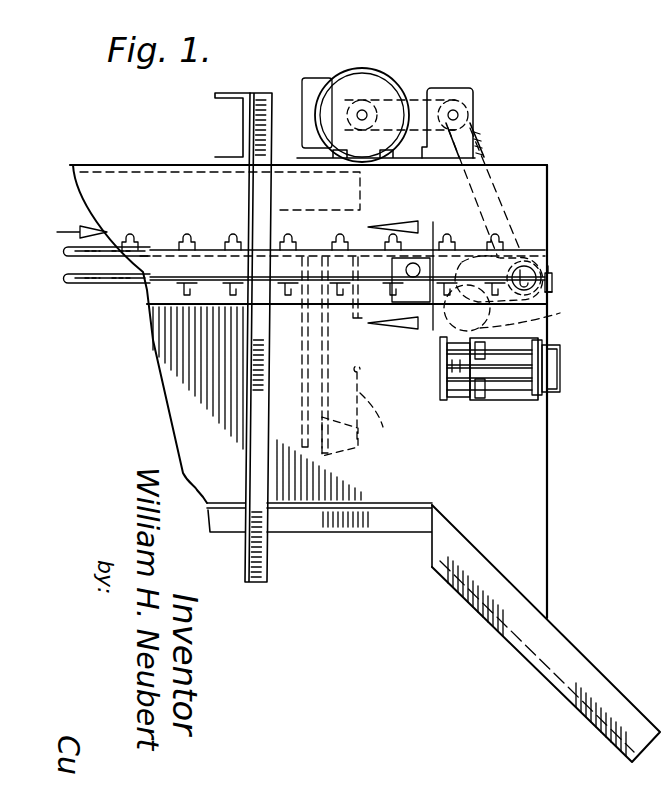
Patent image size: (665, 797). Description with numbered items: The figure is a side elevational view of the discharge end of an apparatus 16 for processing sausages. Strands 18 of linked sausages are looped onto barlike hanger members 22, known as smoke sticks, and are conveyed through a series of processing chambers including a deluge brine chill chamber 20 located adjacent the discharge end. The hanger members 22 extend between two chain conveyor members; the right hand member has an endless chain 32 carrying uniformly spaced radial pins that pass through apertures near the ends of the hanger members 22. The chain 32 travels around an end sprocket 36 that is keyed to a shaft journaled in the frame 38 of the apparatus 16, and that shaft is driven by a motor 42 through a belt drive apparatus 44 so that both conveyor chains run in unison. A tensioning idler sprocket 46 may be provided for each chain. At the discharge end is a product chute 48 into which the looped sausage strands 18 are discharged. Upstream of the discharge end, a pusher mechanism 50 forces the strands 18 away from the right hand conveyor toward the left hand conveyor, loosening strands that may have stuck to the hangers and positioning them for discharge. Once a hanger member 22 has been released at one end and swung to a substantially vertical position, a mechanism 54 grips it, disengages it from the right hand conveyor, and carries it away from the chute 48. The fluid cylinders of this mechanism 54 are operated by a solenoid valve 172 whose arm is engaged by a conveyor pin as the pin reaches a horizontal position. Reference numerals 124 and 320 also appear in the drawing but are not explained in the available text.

The apparatus 16 is at (497, 143).
The strands of linked sausages 18 is at (372, 457).
The deluge brine chill chamber 20 is at (123, 183).
The hanger members 22 is at (217, 243).
The endless chain 32 is at (554, 264).
The end sprocket 36 is at (553, 275).
The frame 38 is at (514, 448).
The motor 42 is at (362, 83).
The belt drive apparatus 44 is at (490, 153).
The tensioning idler sprocket 46 is at (541, 318).
The product chute 48 is at (560, 652).
The pusher mechanism 50 is at (414, 292).
The mechanism 54 is at (572, 367).
The sprocket 124 is at (536, 245).
The solenoid valve 172 is at (606, 276).
The manifold 320 is at (297, 225).